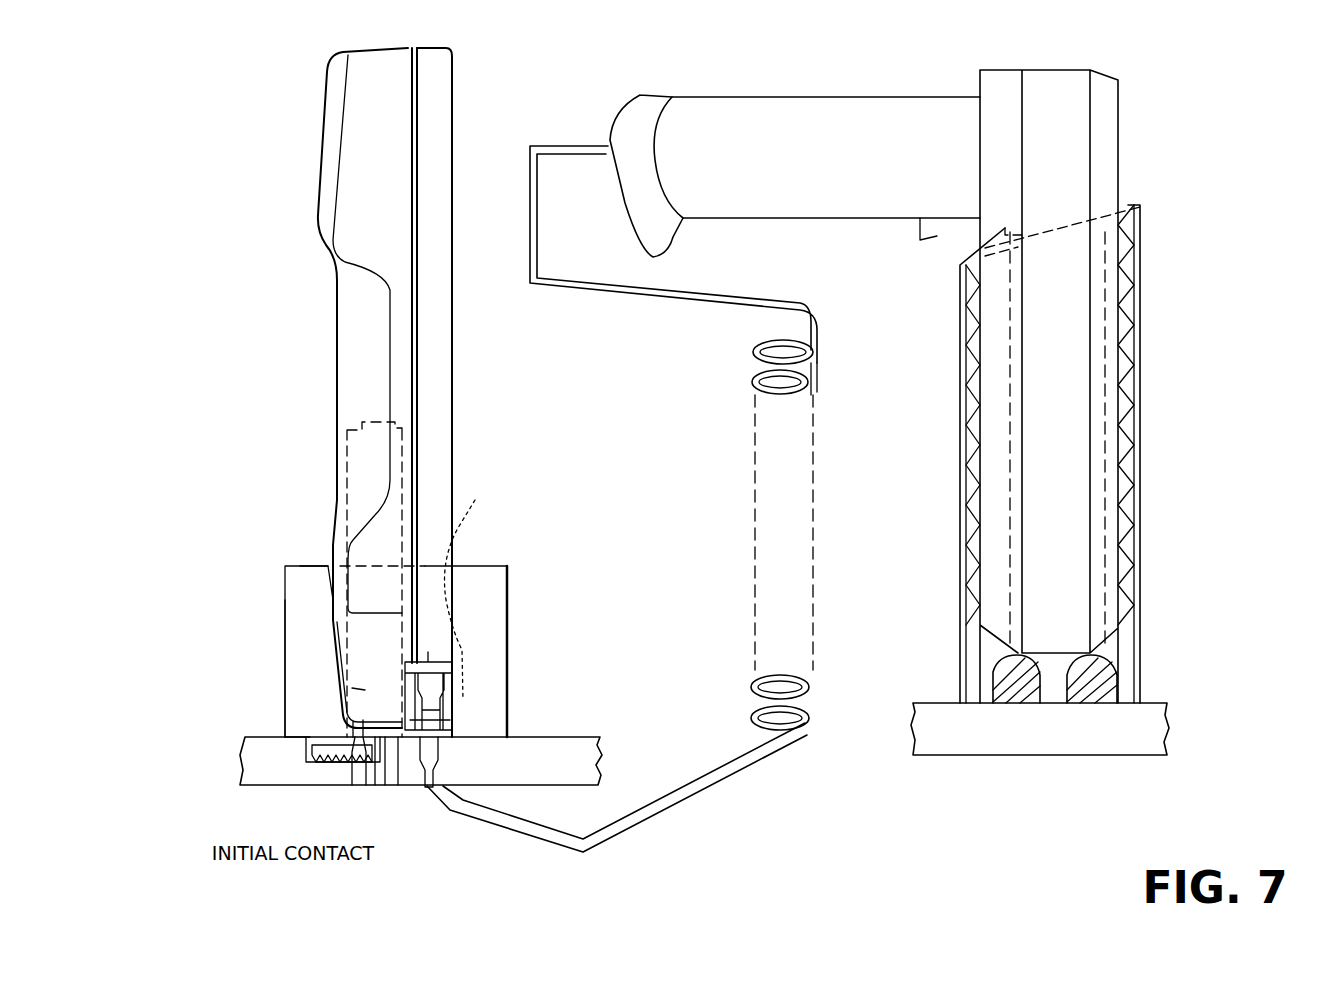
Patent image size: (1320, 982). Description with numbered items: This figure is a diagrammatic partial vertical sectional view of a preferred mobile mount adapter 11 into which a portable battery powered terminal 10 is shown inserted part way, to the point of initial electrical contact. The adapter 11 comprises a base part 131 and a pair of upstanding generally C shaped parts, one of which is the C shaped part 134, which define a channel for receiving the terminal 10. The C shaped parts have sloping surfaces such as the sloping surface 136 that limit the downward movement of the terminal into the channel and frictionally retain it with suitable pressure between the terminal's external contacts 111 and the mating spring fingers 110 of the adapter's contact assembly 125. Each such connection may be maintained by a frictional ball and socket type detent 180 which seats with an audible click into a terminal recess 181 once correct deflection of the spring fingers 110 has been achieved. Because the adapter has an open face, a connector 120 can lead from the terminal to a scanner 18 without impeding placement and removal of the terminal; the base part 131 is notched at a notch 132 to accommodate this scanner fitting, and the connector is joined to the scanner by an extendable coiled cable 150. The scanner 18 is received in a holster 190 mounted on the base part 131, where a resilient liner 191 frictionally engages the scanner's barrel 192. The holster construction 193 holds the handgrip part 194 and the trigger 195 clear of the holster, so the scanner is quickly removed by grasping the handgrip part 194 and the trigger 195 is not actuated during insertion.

The terminal 10 is at (322, 90).
The adapter 11 is at (512, 667).
The scanner 18 is at (1048, 92).
The spring fingers 110 is at (300, 744).
The external contacts 111 is at (348, 733).
The connector 120 is at (447, 762).
The contact assembly 125 is at (335, 765).
The base part 131 is at (530, 757).
The notch 132 is at (397, 782).
The C shaped part 134 is at (303, 603).
The sloping surface 136 is at (338, 568).
The cable 150 is at (745, 673).
The detent 180 is at (462, 630).
The terminal recess 181 is at (474, 583).
The holster 190 is at (955, 395).
The resilient liner 191 is at (974, 288).
The barrel 192 is at (993, 498).
The holster construction 193 is at (1083, 693).
The handgrip part 194 is at (826, 135).
The trigger 195 is at (965, 222).